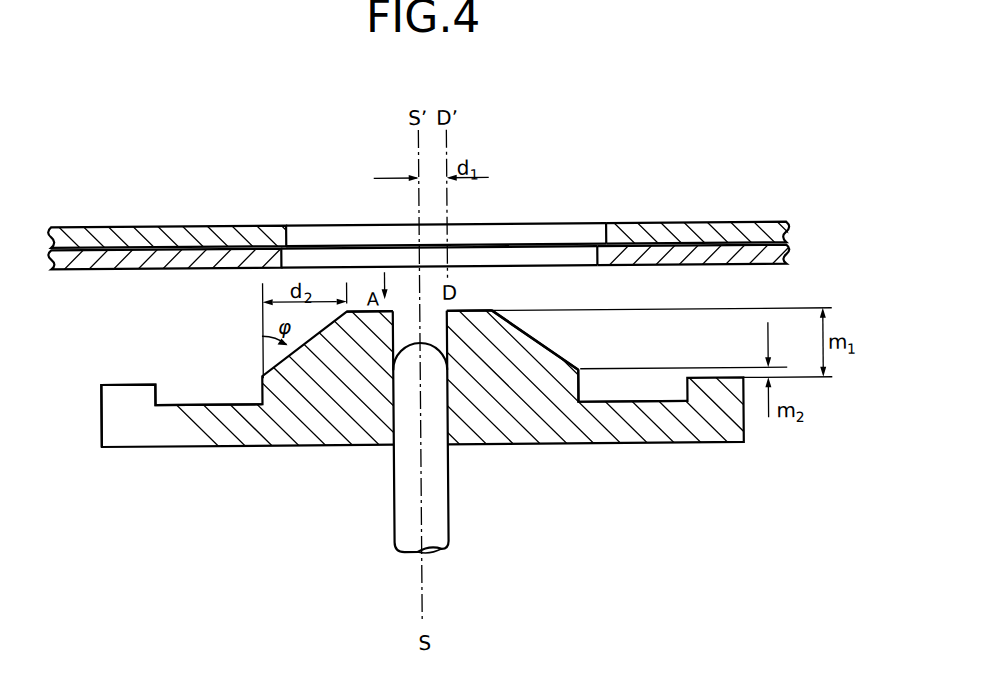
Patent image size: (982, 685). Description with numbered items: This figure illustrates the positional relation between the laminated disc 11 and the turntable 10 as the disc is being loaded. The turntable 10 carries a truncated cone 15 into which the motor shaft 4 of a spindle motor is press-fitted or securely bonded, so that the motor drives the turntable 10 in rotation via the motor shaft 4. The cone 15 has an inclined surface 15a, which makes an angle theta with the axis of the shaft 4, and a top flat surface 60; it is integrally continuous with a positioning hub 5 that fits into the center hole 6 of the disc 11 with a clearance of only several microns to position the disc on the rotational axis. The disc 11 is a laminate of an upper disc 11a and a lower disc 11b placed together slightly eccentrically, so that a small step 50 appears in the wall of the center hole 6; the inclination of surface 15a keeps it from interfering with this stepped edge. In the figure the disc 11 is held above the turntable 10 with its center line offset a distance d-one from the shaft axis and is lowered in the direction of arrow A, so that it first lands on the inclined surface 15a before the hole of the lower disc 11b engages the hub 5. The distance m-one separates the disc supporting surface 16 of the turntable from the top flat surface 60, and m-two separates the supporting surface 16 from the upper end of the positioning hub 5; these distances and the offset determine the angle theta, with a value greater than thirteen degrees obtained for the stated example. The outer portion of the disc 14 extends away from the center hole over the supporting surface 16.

The motor shaft 4 is at (407, 508).
The positioning hub 5 is at (580, 408).
The center hole 6 is at (562, 232).
The turntable 10 is at (468, 395).
The laminated disc 11 is at (717, 224).
The upper disc 11a is at (752, 228).
The lower disc 11b is at (748, 258).
The disc outer portion 14 is at (167, 240).
The truncated cone 15 is at (512, 407).
The inclined surface 15a is at (550, 347).
The disc supporting surface 16 is at (118, 392).
The step 50 is at (602, 238).
The top flat surface 60 is at (480, 311).